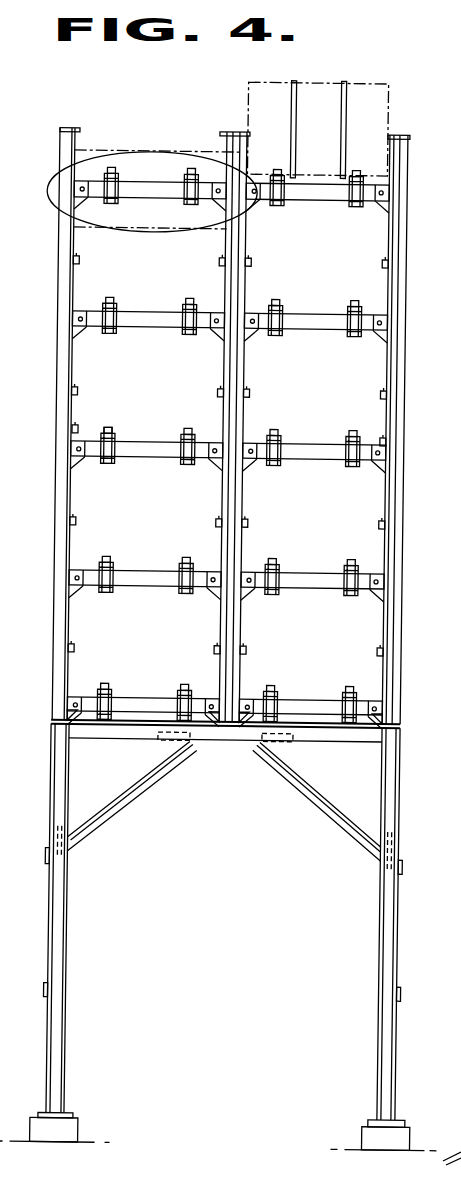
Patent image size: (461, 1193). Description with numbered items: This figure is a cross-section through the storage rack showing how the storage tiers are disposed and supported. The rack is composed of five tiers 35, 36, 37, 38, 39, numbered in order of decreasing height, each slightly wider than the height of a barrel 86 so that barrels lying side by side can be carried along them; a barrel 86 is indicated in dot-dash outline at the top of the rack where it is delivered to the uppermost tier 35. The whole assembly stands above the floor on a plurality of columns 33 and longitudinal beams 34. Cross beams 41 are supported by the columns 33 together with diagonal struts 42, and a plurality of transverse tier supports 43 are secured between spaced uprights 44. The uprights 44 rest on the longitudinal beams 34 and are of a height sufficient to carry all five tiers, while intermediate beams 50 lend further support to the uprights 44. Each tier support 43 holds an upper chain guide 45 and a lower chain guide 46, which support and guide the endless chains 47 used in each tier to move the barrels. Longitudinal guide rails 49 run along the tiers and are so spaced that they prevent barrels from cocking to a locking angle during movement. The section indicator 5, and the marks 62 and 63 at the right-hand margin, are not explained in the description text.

The section view indicator 5 is at (142, 152).
The columns 33 is at (66, 930).
The beams 34 is at (75, 718).
The tier 35 is at (150, 113).
The tier 36 is at (178, 274).
The tier 37 is at (169, 374).
The tier 38 is at (171, 525).
The tier 39 is at (166, 648).
The cross beams 41 is at (204, 745).
The diagonal struts 42 is at (128, 799).
The transverse tier supports 43 is at (300, 580).
The uprights 44 is at (402, 356).
The upper chain guide 45 is at (114, 436).
The lower chain guide 46 is at (112, 463).
The endless chains 47 is at (111, 429).
The longitudinal guide rails 49 is at (80, 264).
The intermediate beams 50 is at (72, 430).
The element 62 is at (449, 606).
The element 63 is at (449, 744).
The barrel 86 is at (375, 114).